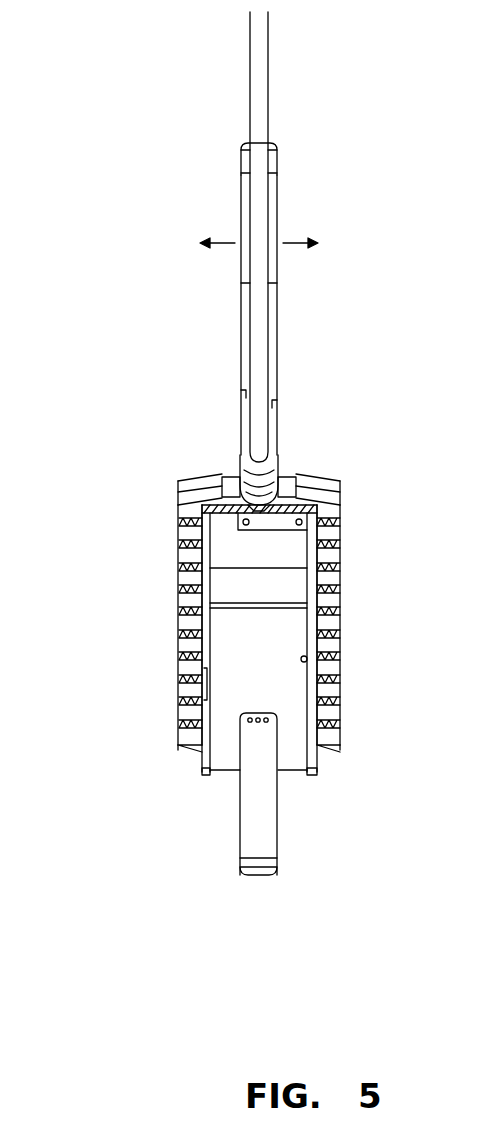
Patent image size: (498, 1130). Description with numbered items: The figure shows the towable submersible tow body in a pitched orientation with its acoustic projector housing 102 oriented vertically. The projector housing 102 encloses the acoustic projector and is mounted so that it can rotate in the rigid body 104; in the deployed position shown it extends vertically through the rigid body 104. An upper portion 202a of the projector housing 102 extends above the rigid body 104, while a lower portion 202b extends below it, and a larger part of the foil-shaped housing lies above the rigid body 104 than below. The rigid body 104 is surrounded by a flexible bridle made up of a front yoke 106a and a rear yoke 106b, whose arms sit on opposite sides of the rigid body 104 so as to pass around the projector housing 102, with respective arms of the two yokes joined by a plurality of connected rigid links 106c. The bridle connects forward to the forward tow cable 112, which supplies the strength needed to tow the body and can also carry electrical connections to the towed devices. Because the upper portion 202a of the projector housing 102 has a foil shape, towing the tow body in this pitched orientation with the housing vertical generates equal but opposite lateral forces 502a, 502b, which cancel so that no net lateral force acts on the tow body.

The forward tow cable 112 is at (262, 30).
The acoustic projector housing 102 is at (271, 195).
The upper portion of the projector housing 202a is at (242, 155).
The lateral force 502a is at (222, 245).
The lateral force 502b is at (296, 245).
The front yoke 106a is at (178, 496).
The rigid links 106c is at (182, 584).
The rigid body 104 is at (215, 645).
The rear yoke 106b is at (190, 742).
The lower portion of the projector housing 202b is at (247, 807).